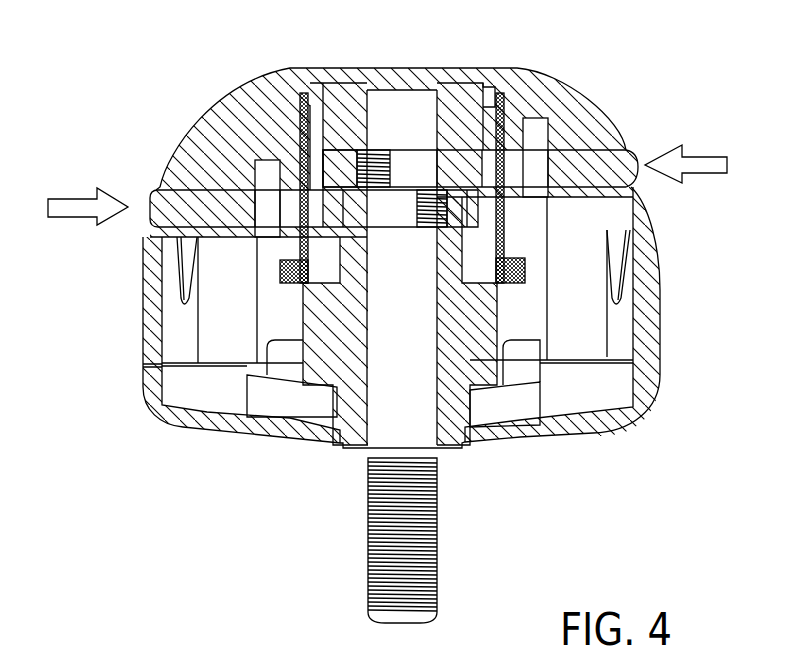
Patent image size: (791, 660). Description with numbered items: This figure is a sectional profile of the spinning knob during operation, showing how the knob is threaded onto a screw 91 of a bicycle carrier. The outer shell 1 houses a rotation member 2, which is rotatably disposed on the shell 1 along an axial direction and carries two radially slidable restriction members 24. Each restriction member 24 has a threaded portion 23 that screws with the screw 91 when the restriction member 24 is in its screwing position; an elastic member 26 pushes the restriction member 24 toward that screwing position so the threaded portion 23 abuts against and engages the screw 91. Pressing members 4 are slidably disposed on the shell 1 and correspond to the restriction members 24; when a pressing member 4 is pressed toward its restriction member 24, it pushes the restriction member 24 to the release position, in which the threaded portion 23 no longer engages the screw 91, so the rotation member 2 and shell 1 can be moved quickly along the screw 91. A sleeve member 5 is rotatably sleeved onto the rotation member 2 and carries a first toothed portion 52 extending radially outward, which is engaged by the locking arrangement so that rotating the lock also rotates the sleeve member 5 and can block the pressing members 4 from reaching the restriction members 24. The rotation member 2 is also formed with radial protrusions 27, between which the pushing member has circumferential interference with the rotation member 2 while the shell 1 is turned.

The shell 1 is at (228, 130).
The rotation member 2 is at (332, 340).
The pressing member 4 is at (605, 172).
The sleeve member 5 is at (300, 243).
The threaded portion 23 is at (354, 148).
The restriction member 24 is at (362, 163).
The elastic member 26 is at (298, 122).
The protrusion 27 is at (307, 308).
The first toothed portion 52 is at (283, 272).
The screw 91 is at (430, 540).